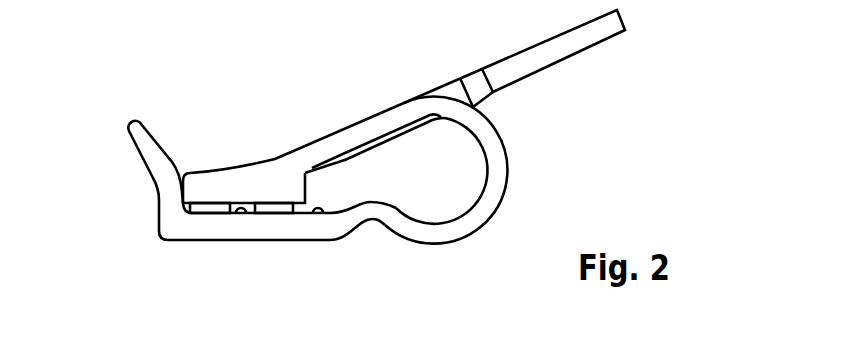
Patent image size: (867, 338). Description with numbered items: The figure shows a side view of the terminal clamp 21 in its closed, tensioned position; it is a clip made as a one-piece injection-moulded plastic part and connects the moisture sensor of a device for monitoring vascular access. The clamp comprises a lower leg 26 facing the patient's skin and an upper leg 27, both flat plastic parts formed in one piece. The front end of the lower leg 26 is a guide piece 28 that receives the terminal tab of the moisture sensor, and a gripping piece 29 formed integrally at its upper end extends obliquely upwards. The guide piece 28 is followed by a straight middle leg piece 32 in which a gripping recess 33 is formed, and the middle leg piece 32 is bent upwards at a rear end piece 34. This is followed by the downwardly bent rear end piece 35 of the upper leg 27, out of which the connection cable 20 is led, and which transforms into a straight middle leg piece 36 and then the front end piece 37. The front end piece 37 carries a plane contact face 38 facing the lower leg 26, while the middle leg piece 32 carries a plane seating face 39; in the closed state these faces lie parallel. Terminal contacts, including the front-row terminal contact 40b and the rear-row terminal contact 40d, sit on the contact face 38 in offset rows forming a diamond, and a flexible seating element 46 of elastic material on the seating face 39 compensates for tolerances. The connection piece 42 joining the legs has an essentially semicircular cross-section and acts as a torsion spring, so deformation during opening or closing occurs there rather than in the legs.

The connection cable 20 is at (622, 19).
The terminal clamp 21 is at (317, 122).
The lower leg 26 is at (189, 232).
The upper leg 27 is at (248, 163).
The guide piece 28 is at (152, 204).
The gripping piece 29 is at (128, 130).
The middle leg piece 32 is at (258, 228).
The gripping recess 33 is at (372, 224).
The rear end piece 34 is at (490, 204).
The rear end piece 35 is at (433, 108).
The middle leg piece 36 is at (363, 133).
The front end piece 37 is at (197, 177).
The contact face 38 is at (182, 207).
The seating face 39 is at (318, 215).
The terminal contact 40b is at (215, 208).
The terminal contact 40d is at (280, 208).
The connection piece 42 is at (497, 150).
The flexible seating element 46 is at (237, 216).